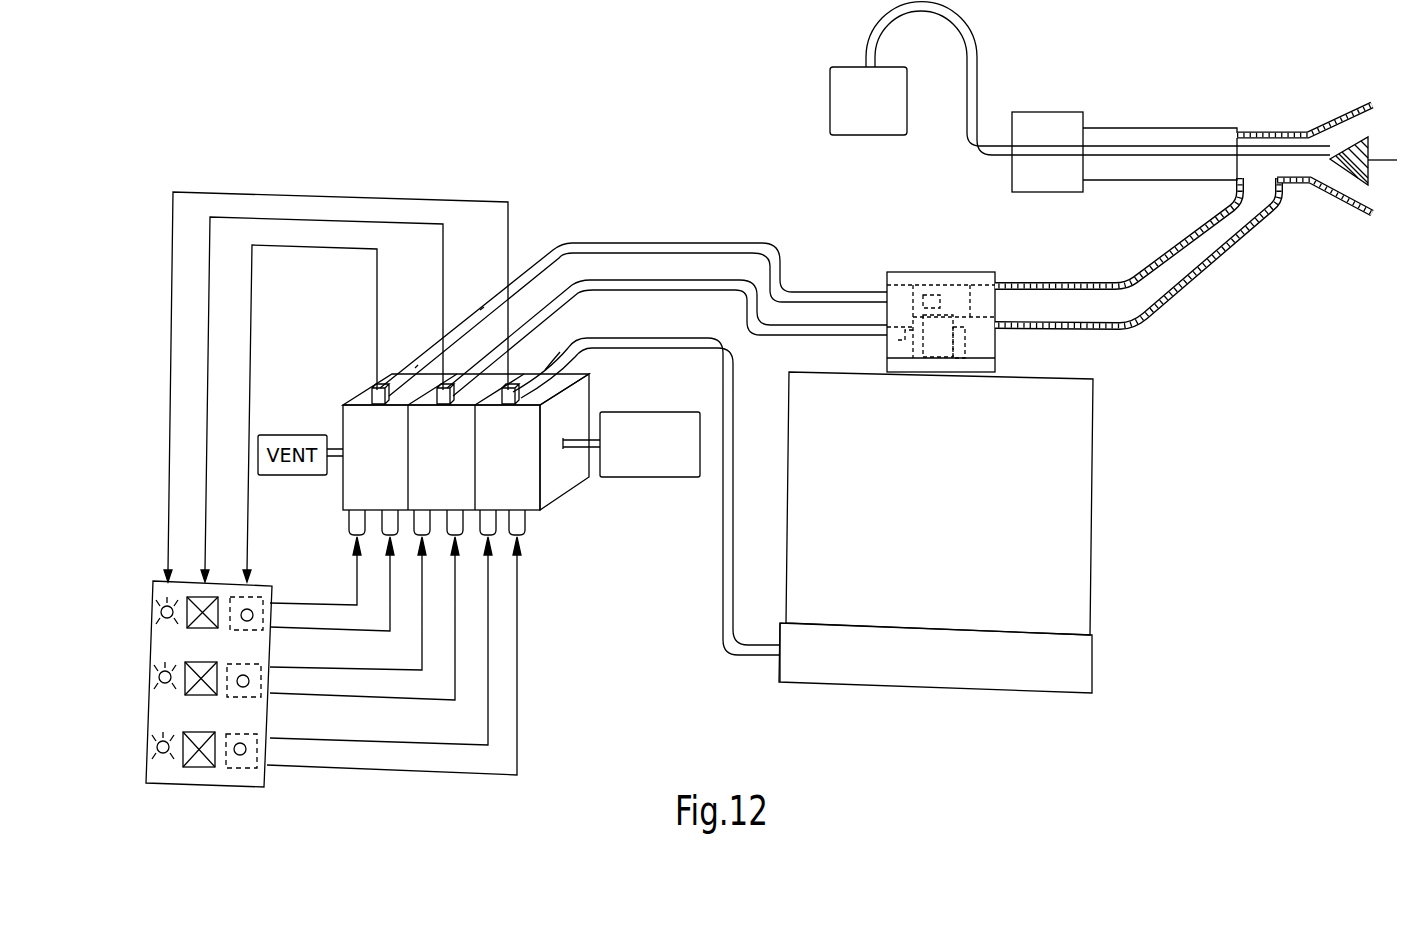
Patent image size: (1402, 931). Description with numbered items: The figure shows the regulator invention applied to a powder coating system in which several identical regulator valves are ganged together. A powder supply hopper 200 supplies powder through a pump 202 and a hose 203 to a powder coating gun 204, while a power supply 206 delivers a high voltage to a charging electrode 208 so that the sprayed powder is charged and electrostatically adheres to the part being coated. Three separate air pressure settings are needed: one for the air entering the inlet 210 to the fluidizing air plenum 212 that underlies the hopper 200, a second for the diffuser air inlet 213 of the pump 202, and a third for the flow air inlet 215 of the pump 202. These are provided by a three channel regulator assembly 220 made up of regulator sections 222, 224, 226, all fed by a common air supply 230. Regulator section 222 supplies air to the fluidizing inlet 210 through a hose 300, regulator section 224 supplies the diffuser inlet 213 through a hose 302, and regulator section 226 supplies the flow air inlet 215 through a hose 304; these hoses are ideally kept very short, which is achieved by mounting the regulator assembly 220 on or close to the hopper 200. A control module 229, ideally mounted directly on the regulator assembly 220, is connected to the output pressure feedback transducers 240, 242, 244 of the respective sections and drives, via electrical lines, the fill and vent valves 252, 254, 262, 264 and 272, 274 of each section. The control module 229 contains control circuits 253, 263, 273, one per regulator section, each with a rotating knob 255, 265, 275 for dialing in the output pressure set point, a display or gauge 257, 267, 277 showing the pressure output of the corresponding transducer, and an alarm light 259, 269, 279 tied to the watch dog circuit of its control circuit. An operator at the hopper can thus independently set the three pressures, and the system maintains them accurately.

The powder supply hopper 200 is at (1080, 520).
The pump 202 is at (925, 272).
The hose 203 is at (1165, 316).
The powder coating gun 204 is at (1153, 128).
The power supply 206 is at (830, 103).
The charging electrode 208 is at (1370, 182).
The inlet 210 is at (780, 660).
The fluidizing air plenum 212 is at (925, 665).
The diffuser air inlet 213 is at (887, 336).
The flow air inlet 215 is at (887, 293).
The three channel regulator assembly 220 is at (501, 420).
The regulator section 222 is at (528, 380).
The regulator section 224 is at (457, 378).
The regulator section 226 is at (397, 378).
The control module 229 is at (299, 524).
The common air supply 230 is at (633, 412).
The output pressure feedback transducer 240 is at (547, 372).
The output pressure feedback transducer 242 is at (485, 305).
The output pressure feedback transducer 244 is at (418, 365).
The fill valve 252 is at (528, 508).
The control circuit 253 is at (265, 790).
The vent valve 254 is at (490, 508).
The rotating knob 255 is at (240, 756).
The display 257 is at (205, 768).
The alarm light 259 is at (157, 752).
The fill valve 262 is at (462, 508).
The control circuit 263 is at (262, 680).
The vent valve 264 is at (422, 508).
The rotating knob 265 is at (245, 692).
The display 267 is at (197, 695).
The alarm light 269 is at (158, 677).
The fill valve 272 is at (393, 508).
The control circuit 273 is at (260, 597).
The vent valve 274 is at (357, 508).
The rotating knob 275 is at (248, 622).
The display 277 is at (203, 600).
The alarm light 279 is at (160, 612).
The hose 300 is at (725, 652).
The hose 302 is at (622, 291).
The hose 304 is at (665, 243).